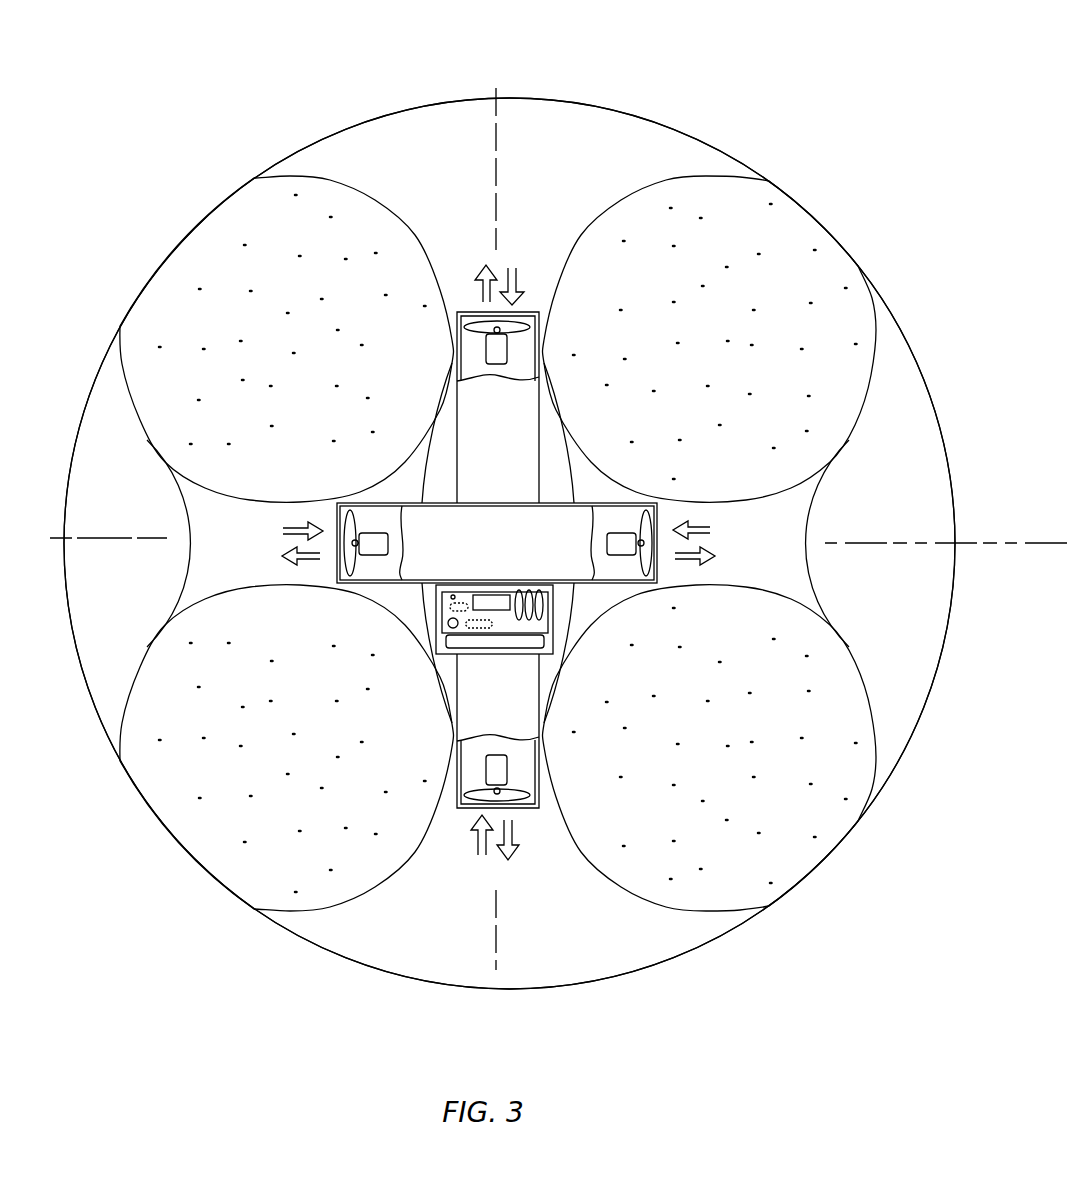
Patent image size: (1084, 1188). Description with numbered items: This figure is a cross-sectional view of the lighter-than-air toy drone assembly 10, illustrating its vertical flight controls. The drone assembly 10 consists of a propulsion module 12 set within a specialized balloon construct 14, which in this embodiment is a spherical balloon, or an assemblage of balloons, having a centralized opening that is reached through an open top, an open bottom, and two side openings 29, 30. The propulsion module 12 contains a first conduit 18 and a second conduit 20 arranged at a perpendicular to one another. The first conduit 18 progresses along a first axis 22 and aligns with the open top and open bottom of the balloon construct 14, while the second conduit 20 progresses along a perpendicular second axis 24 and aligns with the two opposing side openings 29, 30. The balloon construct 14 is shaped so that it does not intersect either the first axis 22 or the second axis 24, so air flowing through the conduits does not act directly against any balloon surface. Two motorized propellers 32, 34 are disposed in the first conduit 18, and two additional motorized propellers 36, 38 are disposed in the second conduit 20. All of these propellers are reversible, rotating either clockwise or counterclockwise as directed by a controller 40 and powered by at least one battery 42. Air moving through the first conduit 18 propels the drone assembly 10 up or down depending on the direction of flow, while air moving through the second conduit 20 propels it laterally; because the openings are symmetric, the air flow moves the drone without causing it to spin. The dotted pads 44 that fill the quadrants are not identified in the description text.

The drone assembly 10 is at (598, 90).
The propulsion module 12 is at (472, 306).
The balloon construct 14 is at (752, 168).
The first conduit 18 is at (498, 450).
The second conduit 20 is at (475, 542).
The first axis 22 is at (492, 135).
The second axis 24 is at (113, 537).
The side opening 29 is at (772, 563).
The side opening 30 is at (220, 553).
The motorized propeller 32 is at (498, 347).
The motorized propeller 34 is at (500, 770).
The motorized propeller 36 is at (618, 547).
The motorized propeller 38 is at (373, 533).
The controller 40 is at (505, 642).
The battery 42 is at (472, 642).
The cushion pad 44 is at (150, 748).